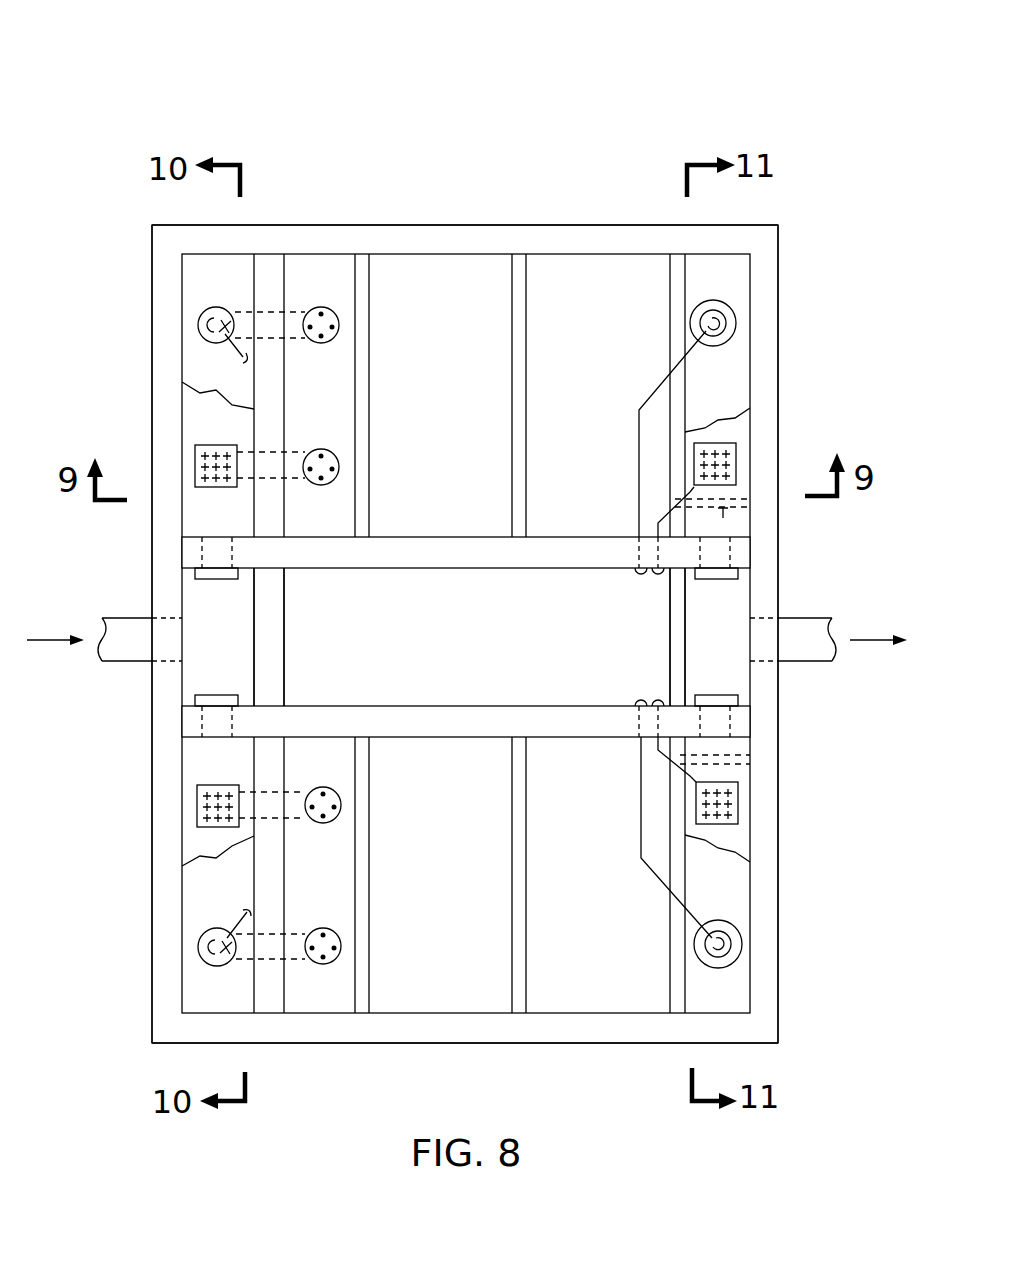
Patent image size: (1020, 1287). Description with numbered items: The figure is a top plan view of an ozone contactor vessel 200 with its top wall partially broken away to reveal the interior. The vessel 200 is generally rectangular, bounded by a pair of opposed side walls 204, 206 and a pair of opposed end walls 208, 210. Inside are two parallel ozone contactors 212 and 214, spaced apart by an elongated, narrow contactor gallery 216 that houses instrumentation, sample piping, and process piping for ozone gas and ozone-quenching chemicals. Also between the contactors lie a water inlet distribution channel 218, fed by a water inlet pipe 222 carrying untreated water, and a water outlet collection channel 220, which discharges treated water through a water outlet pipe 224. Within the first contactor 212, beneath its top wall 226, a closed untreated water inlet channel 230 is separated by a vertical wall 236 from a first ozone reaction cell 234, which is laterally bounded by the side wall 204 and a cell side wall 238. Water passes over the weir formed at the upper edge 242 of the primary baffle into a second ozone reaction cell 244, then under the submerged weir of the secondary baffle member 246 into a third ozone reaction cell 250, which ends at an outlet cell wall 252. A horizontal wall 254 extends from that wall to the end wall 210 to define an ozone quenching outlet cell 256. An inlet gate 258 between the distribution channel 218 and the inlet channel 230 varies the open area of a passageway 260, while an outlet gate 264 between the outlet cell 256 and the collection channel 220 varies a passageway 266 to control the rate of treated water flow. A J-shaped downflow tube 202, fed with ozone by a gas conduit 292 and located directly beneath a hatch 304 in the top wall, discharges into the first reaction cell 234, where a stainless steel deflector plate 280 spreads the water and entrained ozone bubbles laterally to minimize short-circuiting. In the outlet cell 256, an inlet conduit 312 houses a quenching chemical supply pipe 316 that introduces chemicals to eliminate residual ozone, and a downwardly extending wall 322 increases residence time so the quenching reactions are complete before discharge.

The vessel 200 is at (568, 119).
The downflow tube 202 is at (198, 320).
The side wall 204 is at (490, 226).
The side wall 206 is at (478, 1043).
The end wall 208 is at (158, 712).
The end wall 210 is at (778, 742).
The first ozone contactor 212 is at (822, 272).
The second ozone contactor 214 is at (814, 890).
The contactor gallery 216 is at (455, 666).
The water inlet distribution channel 218 is at (247, 673).
The water outlet collection channel 220 is at (697, 654).
The water inlet pipe 222 is at (118, 620).
The water outlet pipe 224 is at (808, 661).
The top wall 226 is at (198, 529).
The untreated water inlet channel 230 is at (195, 369).
The first ozone reaction cell 234 is at (466, 637).
The vertical wall 236 is at (279, 256).
The cell side wall 238 is at (437, 537).
The upper edge 242 is at (368, 284).
The second ozone reaction cell 244 is at (421, 400).
The secondary baffle member 246 is at (512, 339).
The third ozone reaction cell 250 is at (557, 348).
The outlet cell wall 252 is at (670, 283).
The horizontal wall 254 is at (750, 424).
The ozone quenching outlet cell 256 is at (740, 380).
The inlet gate 258 is at (217, 581).
The passageway 260 is at (234, 561).
The outlet gate 264 is at (717, 580).
The passageway 266 is at (730, 558).
The deflector plate 280 is at (321, 345).
The gas conduit 292 is at (214, 358).
The hatch 304 is at (195, 460).
The inlet conduit 312 is at (740, 323).
The quenching chemical supply pipe 316 is at (639, 432).
The downwardly extending wall 322 is at (723, 518).